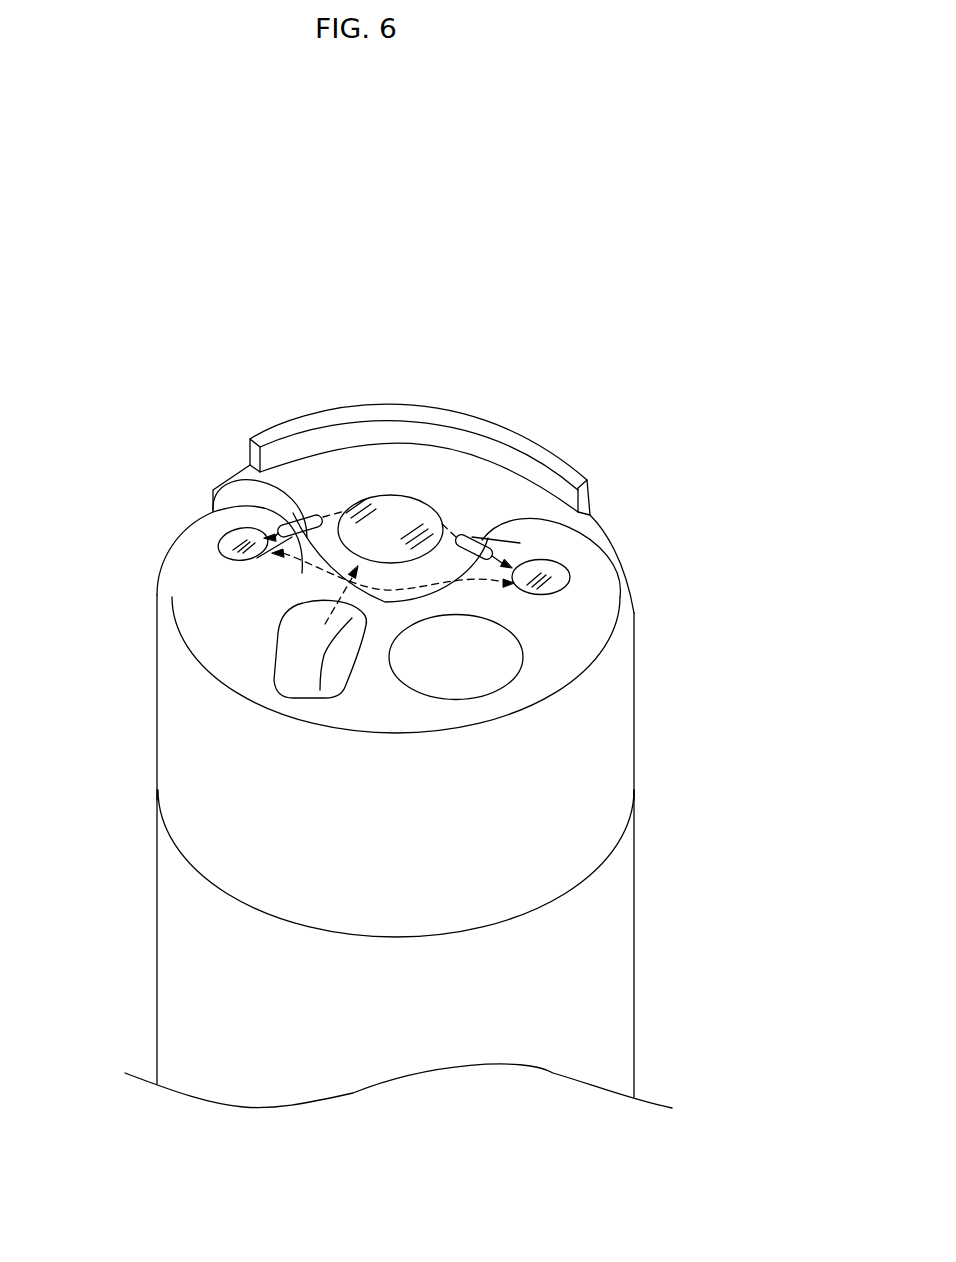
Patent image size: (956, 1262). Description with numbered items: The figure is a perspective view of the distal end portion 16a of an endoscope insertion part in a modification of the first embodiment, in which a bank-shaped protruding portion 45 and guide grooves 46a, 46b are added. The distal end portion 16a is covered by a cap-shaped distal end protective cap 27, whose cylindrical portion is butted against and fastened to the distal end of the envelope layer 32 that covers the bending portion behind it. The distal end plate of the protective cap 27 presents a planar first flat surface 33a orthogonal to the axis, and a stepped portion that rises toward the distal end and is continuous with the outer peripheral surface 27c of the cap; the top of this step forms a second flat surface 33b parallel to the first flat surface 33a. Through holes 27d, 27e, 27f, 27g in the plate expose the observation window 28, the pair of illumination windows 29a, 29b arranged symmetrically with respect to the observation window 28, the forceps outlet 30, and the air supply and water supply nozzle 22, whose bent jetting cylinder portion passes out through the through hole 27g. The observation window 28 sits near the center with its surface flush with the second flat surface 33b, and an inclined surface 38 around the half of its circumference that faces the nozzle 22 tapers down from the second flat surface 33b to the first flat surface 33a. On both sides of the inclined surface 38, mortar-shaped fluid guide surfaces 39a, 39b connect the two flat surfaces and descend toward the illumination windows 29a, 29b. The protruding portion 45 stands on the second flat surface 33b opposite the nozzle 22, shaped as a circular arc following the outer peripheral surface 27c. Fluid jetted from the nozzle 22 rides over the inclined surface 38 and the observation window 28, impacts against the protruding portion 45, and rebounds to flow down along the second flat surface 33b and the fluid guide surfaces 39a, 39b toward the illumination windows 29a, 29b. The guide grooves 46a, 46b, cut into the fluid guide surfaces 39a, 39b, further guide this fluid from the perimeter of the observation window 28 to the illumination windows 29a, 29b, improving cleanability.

The distal end portion 16a is at (515, 245).
The air supply and water supply nozzle 22 is at (290, 645).
The distal end protective cap 27 is at (608, 763).
The outer peripheral surface 27c is at (630, 578).
The through hole 27d is at (437, 527).
The through hole 27e is at (246, 560).
The through hole 27f is at (540, 593).
The through hole 27g is at (318, 698).
The observation window 28 is at (402, 506).
The illumination window 29a is at (245, 540).
The illumination window 29b is at (543, 560).
The forceps outlet 30 is at (470, 680).
The envelope layer 32 is at (630, 980).
The first flat surface 33a is at (235, 675).
The second flat surface 33b is at (490, 480).
The inclined surface 38 is at (380, 580).
The fluid guide surface 39a is at (277, 510).
The fluid guide surface 39b is at (543, 535).
The protruding portion 45 is at (357, 435).
The guide groove 46a is at (243, 556).
The guide groove 46b is at (493, 550).